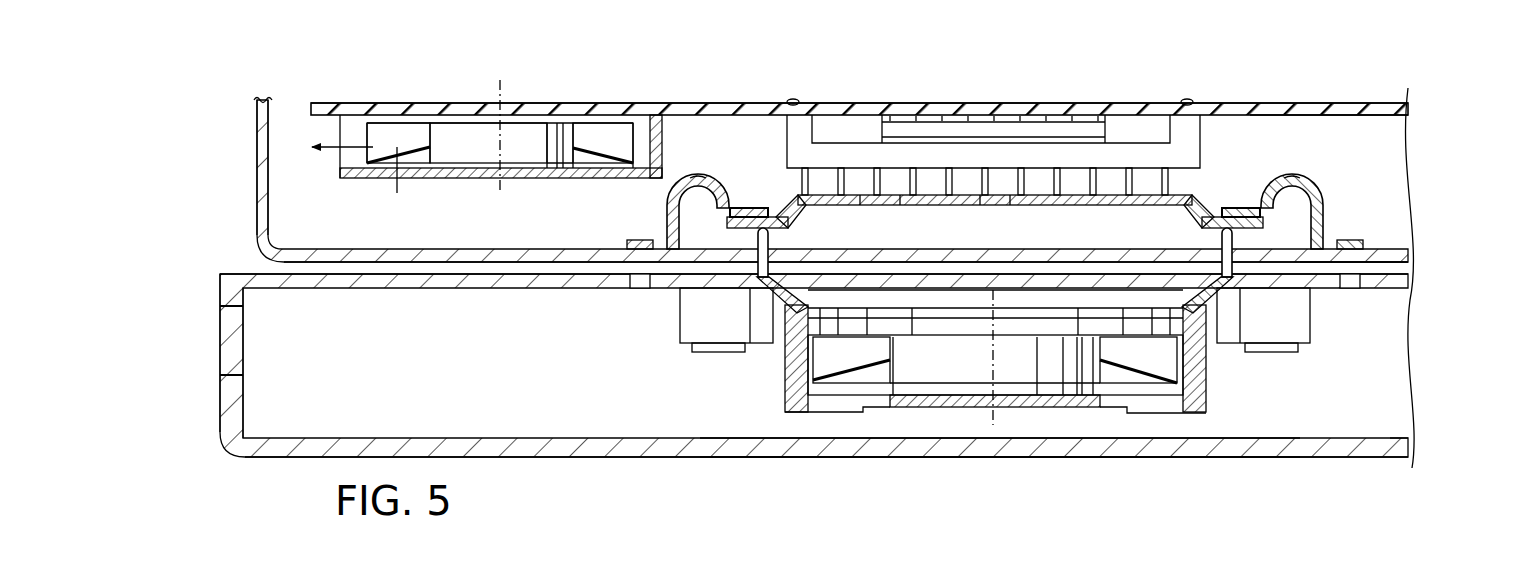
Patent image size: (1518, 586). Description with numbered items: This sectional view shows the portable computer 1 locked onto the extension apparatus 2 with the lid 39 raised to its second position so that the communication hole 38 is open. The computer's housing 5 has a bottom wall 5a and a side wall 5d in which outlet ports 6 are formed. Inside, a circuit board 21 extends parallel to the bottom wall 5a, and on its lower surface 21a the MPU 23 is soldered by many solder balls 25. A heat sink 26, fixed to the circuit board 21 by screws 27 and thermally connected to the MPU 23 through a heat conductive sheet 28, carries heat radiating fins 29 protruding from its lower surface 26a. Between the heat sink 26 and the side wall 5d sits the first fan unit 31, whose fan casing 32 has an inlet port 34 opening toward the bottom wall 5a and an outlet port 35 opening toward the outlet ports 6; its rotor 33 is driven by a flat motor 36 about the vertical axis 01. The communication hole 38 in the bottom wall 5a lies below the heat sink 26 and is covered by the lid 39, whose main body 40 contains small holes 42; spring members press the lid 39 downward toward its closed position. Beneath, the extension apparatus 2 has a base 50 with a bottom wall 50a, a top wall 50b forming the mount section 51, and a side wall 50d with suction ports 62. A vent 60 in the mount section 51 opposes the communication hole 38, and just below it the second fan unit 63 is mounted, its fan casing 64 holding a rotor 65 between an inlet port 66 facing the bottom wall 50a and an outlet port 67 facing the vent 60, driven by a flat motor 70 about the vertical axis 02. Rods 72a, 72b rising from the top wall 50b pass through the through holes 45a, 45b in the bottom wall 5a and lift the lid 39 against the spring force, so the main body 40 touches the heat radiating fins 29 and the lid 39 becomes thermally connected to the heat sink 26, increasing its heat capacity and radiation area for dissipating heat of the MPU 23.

The portable computer 1 is at (1388, 98).
The extension apparatus 2 is at (1422, 376).
The housing 5 is at (1400, 178).
The bottom wall 5a is at (385, 263).
The side wall 5d is at (258, 220).
The outlet ports 6 is at (257, 172).
The axis of the rotor 01 is at (498, 84).
The axis of the rotor 02 is at (996, 295).
The circuit board 21 is at (707, 104).
The lower surface of the circuit board 21a is at (1312, 117).
The MPU 23 is at (945, 128).
The solder balls 25 is at (1050, 115).
The heat sink 26 is at (1120, 158).
The lower surface of the heat sink 26a is at (852, 183).
The screws 27 is at (793, 100).
The heat conductive sheet 28 is at (920, 135).
The heat radiating fins 29 is at (1062, 190).
The first fan unit 31 is at (483, 178).
The fan casing 32 is at (655, 140).
The rotor 33 is at (530, 128).
The inlet port 34 is at (585, 175).
The outlet port 35 is at (353, 130).
The flat motor 36 is at (528, 170).
The communication hole 38 is at (1108, 270).
The lid 39 is at (940, 206).
The main body 40 is at (1000, 206).
The small holes 42 is at (890, 206).
The through hole 45a is at (1190, 298).
The through hole 45b is at (782, 290).
The base 50 is at (1408, 440).
The bottom wall 50a is at (578, 458).
The top wall 50b is at (462, 289).
The side wall 50d is at (230, 398).
The mount section 51 is at (1382, 269).
The vent 60 is at (1050, 318).
The suction ports 62 is at (232, 368).
The second fan unit 63 is at (970, 439).
The fan casing 64 is at (778, 392).
The rotor 65 is at (1083, 399).
The inlet port 66 is at (1160, 439).
The outlet port 67 is at (905, 318).
The flat motor 70 is at (925, 398).
The rod 72a is at (1218, 240).
The rod 72b is at (772, 240).